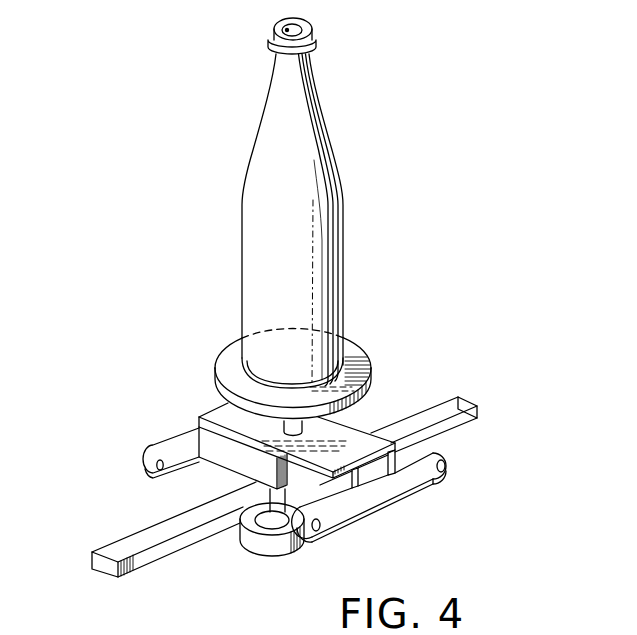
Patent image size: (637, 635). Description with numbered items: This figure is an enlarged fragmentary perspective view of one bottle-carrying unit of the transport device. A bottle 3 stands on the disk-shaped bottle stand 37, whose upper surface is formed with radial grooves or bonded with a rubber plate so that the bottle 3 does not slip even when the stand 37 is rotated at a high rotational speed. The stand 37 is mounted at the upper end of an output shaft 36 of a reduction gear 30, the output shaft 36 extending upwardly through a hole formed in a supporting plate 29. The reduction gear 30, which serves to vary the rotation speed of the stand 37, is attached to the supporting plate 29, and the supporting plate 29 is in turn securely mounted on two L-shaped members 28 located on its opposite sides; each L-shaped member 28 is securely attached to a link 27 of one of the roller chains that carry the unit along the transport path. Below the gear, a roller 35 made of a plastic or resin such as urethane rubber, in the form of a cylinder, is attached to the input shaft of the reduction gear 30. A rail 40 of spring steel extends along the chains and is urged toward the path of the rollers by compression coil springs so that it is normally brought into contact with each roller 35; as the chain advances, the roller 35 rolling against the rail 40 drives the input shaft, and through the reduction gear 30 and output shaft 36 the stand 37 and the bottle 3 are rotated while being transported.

The bottle 3 is at (343, 212).
The link 27 is at (167, 438).
The L-shaped member 28 is at (373, 475).
The supporting plate 29 is at (347, 433).
The reduction gear 30 is at (237, 462).
The roller 35 is at (247, 550).
The output shaft 36 is at (223, 412).
The bottle stand 37 is at (356, 350).
The rail 40 is at (461, 405).